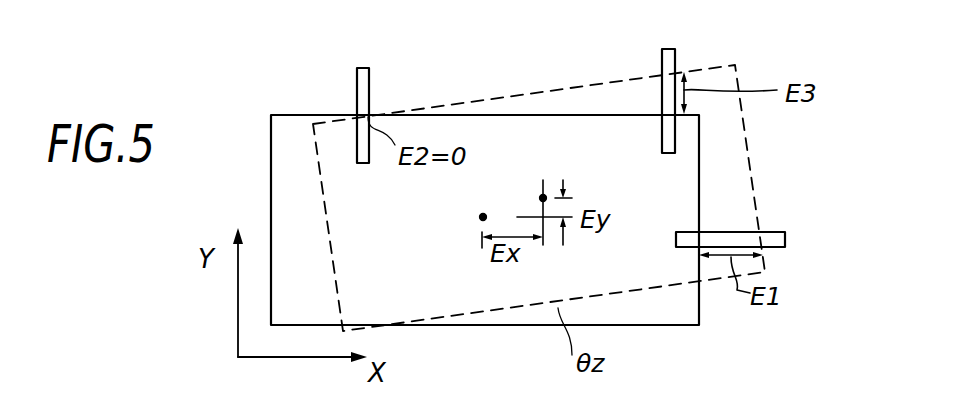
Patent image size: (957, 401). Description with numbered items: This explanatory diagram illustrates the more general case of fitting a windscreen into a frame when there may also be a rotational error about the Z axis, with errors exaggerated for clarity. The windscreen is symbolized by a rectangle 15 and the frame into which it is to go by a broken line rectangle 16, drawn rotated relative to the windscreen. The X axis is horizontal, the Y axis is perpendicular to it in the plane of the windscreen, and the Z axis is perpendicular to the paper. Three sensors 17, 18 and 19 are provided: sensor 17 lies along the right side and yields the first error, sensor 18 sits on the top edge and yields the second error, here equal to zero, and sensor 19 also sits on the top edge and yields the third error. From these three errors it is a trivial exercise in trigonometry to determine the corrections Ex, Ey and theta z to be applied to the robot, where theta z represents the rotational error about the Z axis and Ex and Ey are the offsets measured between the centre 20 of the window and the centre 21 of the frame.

The rectangle 15 is at (662, 325).
The broken line rectangle 16 is at (752, 157).
The sensor 17 is at (786, 239).
The sensor 18 is at (370, 82).
The sensor 19 is at (676, 57).
The centre of the window 20 is at (480, 218).
The centre of the frame 21 is at (543, 196).